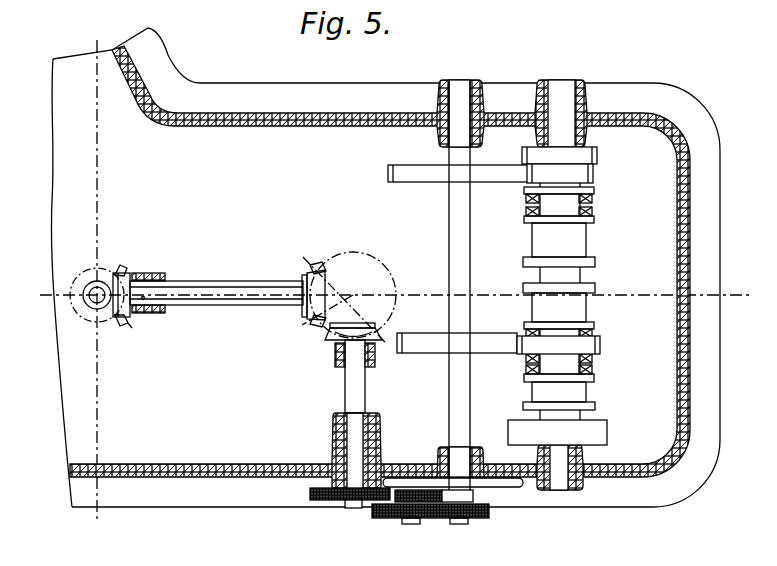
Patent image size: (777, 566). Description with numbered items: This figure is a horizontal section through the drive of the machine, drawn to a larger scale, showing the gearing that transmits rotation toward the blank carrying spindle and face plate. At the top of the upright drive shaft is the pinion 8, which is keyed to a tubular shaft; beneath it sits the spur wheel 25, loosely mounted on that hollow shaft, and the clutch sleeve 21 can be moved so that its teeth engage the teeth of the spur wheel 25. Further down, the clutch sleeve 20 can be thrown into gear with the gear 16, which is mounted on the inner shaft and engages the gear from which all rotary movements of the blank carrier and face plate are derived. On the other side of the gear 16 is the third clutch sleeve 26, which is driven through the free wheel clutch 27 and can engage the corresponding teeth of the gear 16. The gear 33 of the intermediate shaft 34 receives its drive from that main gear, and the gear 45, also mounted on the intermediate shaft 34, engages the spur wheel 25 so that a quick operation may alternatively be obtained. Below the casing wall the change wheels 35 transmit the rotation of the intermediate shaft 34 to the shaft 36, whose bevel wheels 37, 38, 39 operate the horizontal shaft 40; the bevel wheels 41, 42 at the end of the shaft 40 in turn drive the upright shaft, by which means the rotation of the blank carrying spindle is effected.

The pinion 8 is at (590, 155).
The gear 16 is at (583, 344).
The clutch sleeve 20 is at (573, 312).
The clutch sleeve 21 is at (573, 247).
The spur wheel 25 is at (578, 172).
The third clutch sleeve 26 is at (573, 391).
The free wheel clutch 27 is at (590, 439).
The gear 33 is at (437, 347).
The intermediate shaft 34 is at (456, 231).
The change wheels 35 is at (357, 497).
The shaft 36 is at (352, 385).
The bevel wheel 37 is at (332, 334).
The bevel wheel 38 is at (361, 244).
The bevel wheel 39 is at (308, 272).
The shaft 40 is at (190, 290).
The bevel wheel 41 is at (120, 270).
The bevel wheel 42 is at (88, 283).
The gear 45 is at (394, 173).